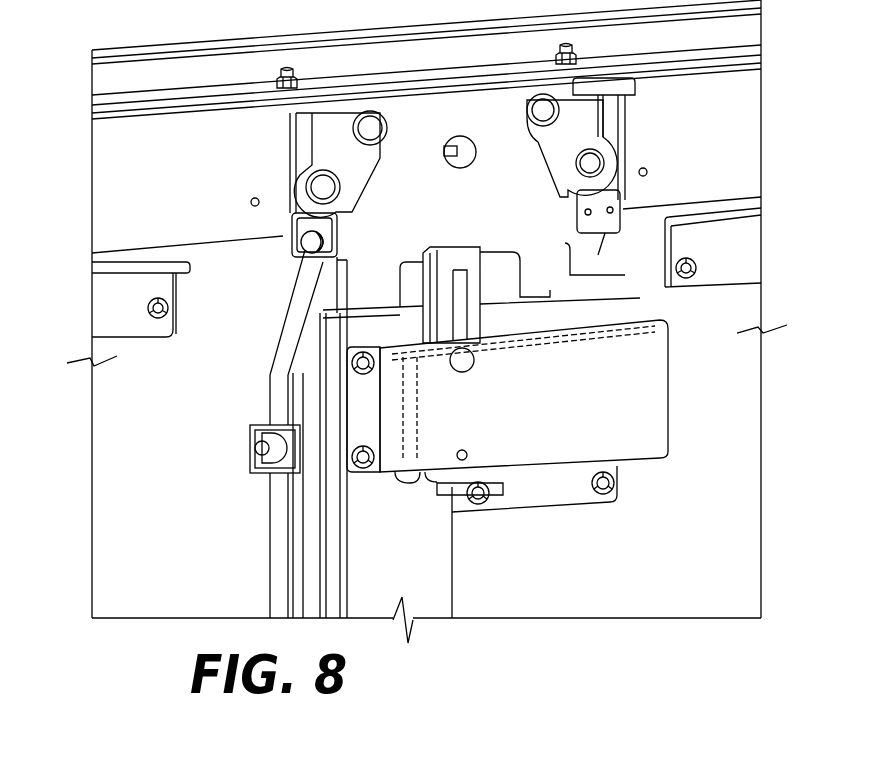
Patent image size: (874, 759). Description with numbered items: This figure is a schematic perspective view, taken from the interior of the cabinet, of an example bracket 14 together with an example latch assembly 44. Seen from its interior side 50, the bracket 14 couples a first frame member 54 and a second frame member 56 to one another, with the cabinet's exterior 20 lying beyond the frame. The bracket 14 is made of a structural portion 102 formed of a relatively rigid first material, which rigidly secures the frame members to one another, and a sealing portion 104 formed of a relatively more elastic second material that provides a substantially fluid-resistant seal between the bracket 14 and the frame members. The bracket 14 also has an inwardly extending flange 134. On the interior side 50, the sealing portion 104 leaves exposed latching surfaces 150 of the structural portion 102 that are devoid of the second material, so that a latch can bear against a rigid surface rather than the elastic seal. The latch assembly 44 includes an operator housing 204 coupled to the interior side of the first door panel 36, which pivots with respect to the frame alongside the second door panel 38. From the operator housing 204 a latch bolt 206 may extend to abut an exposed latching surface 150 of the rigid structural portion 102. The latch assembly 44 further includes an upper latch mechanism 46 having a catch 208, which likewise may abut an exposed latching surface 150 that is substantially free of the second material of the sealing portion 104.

The bracket 14 is at (423, 115).
The exterior 20 is at (259, 10).
The first door panel 36 is at (233, 293).
The second door panel 38 is at (720, 411).
The latch assembly 44 is at (223, 465).
The upper latch mechanism 46 is at (233, 376).
The interior side 50 is at (437, 210).
The first frame member 54 is at (108, 172).
The second frame member 56 is at (747, 117).
The structural portion 102 is at (575, 110).
The sealing portion 104 is at (618, 118).
The inwardly extending flange 134 is at (487, 97).
The exposed latching surface 150 is at (333, 217).
The operator housing 204 is at (573, 386).
The latch bolt 206 is at (460, 250).
The catch 208 is at (293, 288).